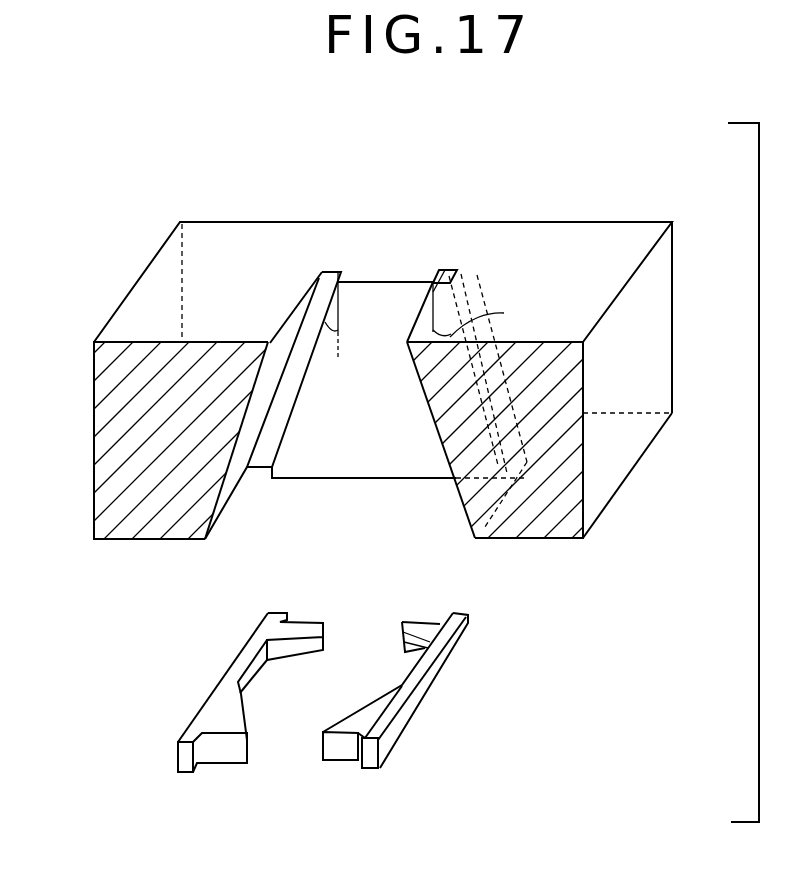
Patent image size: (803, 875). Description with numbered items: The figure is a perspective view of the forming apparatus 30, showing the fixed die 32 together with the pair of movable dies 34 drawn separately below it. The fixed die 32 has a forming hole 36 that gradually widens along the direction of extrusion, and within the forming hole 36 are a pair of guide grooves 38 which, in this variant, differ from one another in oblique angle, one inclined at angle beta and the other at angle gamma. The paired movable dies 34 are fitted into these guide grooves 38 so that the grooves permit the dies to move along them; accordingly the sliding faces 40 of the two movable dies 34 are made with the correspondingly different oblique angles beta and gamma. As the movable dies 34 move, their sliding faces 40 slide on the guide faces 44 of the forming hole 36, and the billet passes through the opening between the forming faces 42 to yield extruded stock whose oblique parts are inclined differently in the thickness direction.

The apparatus 30 is at (653, 154).
The fixed die 32 is at (556, 219).
The movable die 34 is at (243, 648).
The forming hole 36 is at (387, 330).
The guide groove 38 is at (306, 340).
The sliding face 40 is at (177, 748).
The forming face 42 is at (405, 642).
The guide face 44 is at (242, 466).